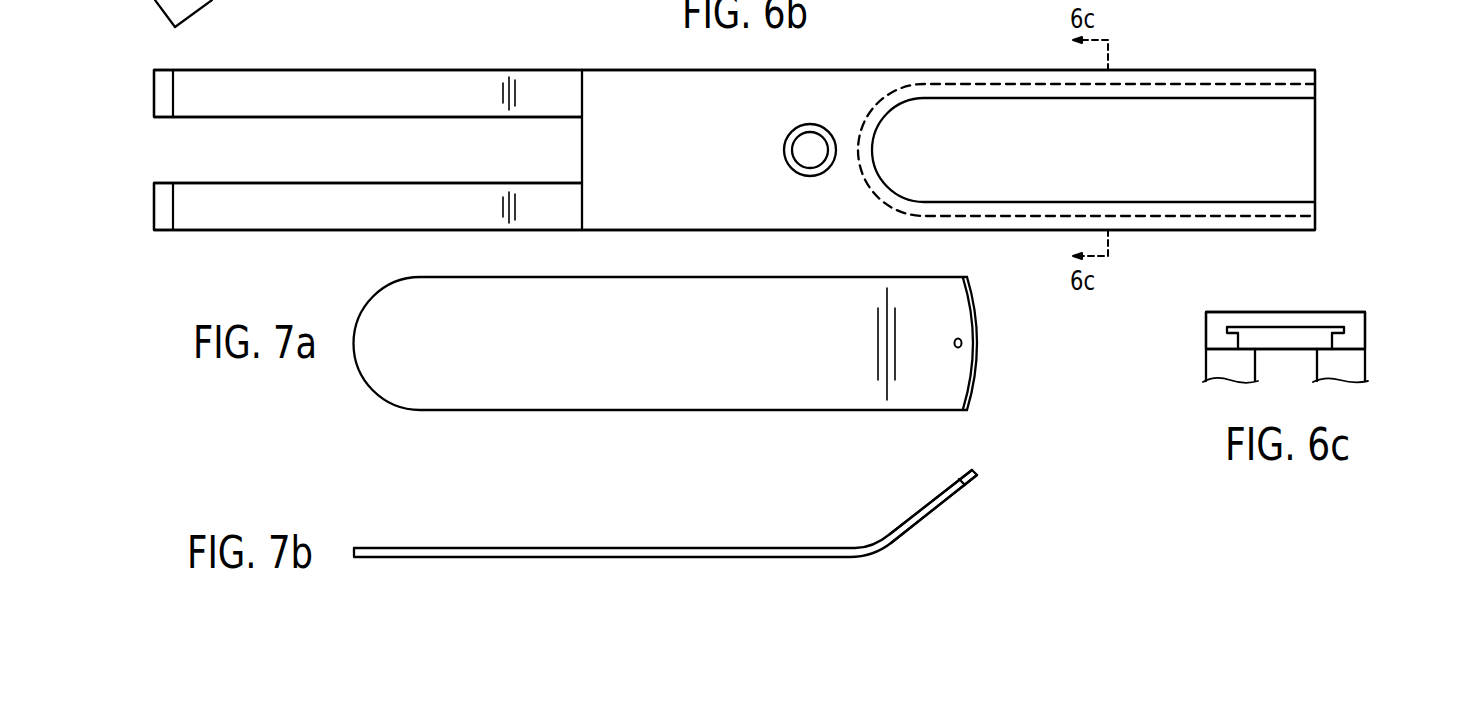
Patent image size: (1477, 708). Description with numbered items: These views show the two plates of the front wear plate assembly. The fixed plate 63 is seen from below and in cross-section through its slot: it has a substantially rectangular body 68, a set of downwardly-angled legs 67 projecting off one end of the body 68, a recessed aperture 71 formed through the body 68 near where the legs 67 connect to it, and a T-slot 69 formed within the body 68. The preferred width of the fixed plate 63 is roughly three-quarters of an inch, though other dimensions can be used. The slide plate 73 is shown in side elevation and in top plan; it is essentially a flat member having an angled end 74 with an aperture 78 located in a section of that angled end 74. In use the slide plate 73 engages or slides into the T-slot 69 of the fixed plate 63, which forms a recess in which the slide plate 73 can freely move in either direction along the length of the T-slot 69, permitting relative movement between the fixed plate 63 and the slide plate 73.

In FIG. 6b, the fixed plate 63 is at (606, 40).
In FIG. 6c, the fixed plate 63 is at (1220, 295).
In FIG. 6b, the downwardly-angled legs 67 is at (312, 80).
In FIG. 6c, the downwardly-angled legs 67 is at (1212, 363).
In FIG. 6b, the body 68 is at (853, 215).
In FIG. 6c, the body 68 is at (1355, 318).
In FIG. 6b, the T-slot 69 is at (1292, 160).
In FIG. 6c, the T-slot 69 is at (1283, 340).
In FIG. 6b, the recessed aperture 71 is at (810, 142).
In FIG. 7a, the slide plate 73 is at (665, 432).
In FIG. 7b, the slide plate 73 is at (640, 573).
In FIG. 7a, the angled end 74 is at (929, 395).
In FIG. 7b, the angled end 74 is at (937, 509).
In FIG. 7a, the aperture 78 is at (961, 340).
In FIG. 7b, the aperture 78 is at (968, 490).